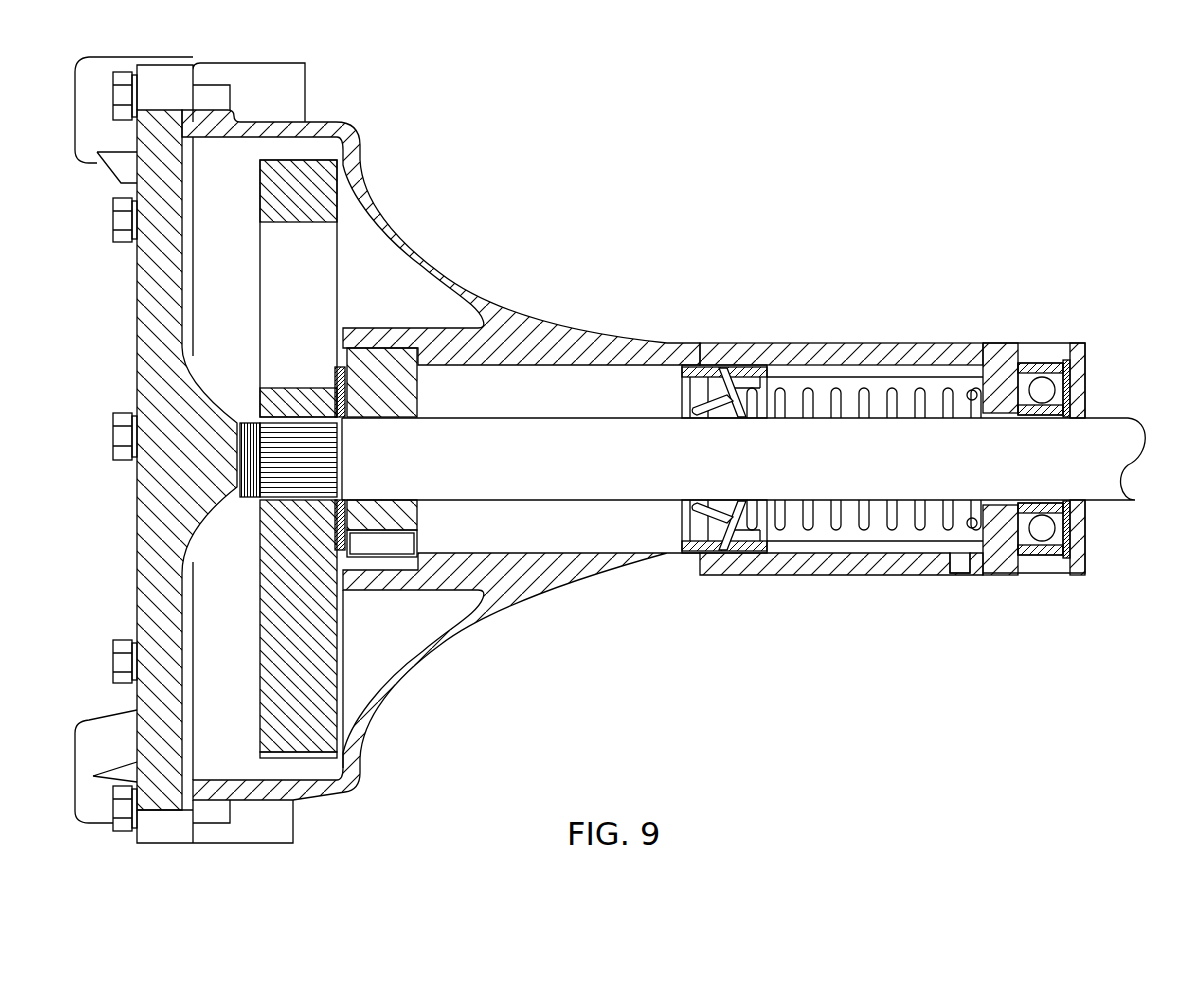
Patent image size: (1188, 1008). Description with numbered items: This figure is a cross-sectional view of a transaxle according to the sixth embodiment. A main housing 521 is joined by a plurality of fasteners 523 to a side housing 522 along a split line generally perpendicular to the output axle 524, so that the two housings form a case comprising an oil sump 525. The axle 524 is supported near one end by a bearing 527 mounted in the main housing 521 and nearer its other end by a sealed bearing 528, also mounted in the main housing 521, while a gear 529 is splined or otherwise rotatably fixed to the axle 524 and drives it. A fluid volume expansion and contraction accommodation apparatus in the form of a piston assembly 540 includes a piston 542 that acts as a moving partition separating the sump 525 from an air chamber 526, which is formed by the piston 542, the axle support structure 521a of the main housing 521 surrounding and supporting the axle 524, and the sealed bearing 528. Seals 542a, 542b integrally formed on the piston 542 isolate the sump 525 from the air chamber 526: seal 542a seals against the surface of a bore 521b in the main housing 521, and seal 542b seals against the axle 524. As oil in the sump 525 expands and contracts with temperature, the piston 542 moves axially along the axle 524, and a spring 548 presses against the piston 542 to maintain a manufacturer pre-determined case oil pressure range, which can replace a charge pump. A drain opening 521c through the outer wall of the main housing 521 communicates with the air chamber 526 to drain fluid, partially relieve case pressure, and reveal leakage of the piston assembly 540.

The main housing 521 is at (228, 132).
The axle support structure 521a is at (903, 345).
The bore 521b is at (780, 547).
The drain opening 521c is at (958, 562).
The side housing 522 is at (157, 252).
The fasteners 523 is at (112, 222).
The output axle 524 is at (602, 472).
The oil sump 525 is at (208, 770).
The air chamber 526 is at (890, 541).
The bearing 527 is at (377, 394).
The sealed bearing 528 is at (1042, 388).
The gear 529 is at (287, 665).
The piston assembly 540 is at (706, 254).
The piston 542 is at (722, 368).
The seal 542a is at (700, 553).
The seal 542b is at (703, 503).
The spring 548 is at (836, 390).